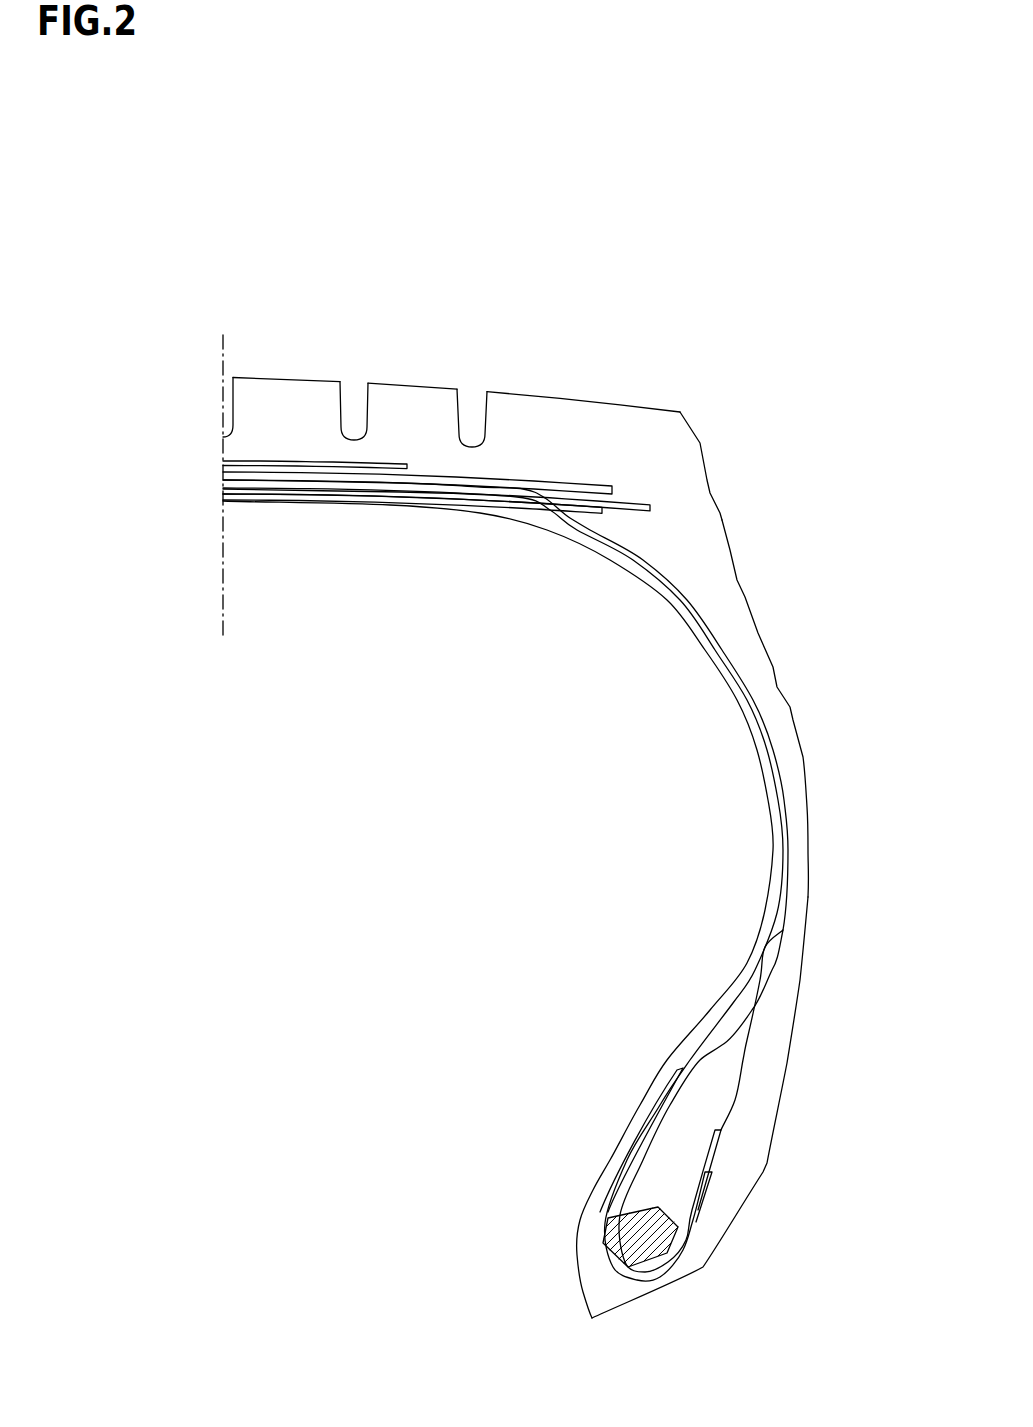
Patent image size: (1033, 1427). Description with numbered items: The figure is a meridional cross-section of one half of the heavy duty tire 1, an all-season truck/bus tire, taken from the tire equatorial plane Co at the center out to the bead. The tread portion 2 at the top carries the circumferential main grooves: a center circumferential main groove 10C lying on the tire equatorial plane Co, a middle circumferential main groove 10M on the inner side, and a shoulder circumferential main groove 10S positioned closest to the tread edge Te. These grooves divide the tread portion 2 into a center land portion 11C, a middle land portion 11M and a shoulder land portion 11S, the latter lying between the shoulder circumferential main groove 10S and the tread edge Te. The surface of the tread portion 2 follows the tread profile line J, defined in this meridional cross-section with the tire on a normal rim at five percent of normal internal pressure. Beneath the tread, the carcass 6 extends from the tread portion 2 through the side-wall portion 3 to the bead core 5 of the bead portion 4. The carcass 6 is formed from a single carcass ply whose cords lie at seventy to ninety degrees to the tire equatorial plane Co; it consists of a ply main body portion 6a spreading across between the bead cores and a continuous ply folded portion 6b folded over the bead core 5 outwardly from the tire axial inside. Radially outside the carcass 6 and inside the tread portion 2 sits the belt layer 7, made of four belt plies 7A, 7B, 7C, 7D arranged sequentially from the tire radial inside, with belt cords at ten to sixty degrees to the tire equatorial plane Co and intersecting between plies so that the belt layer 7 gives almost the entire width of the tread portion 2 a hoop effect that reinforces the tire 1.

The heavy duty tire 1 is at (728, 284).
The tread portion 2 is at (538, 412).
The side-wall portion 3 is at (821, 775).
The bead portion 4 is at (552, 1144).
The bead core 5 is at (615, 1238).
The carcass 6 is at (553, 962).
The ply main body portion 6a is at (730, 1007).
The ply folded portion 6b is at (717, 1143).
The belt layer 7 is at (135, 417).
The belt ply 7A is at (223, 486).
The belt ply 7B is at (223, 478).
The belt ply 7C is at (223, 470).
The belt ply 7D is at (223, 462).
The center circumferential main groove 10C is at (242, 390).
The middle circumferential main groove 10M is at (355, 407).
The shoulder circumferential main groove 10S is at (473, 410).
The center land portion 11C is at (297, 405).
The middle land portion 11M is at (413, 403).
The shoulder land portion 11S is at (603, 430).
The tread profile line J is at (648, 407).
The tread edge Te is at (680, 410).
The tire equatorial plane Co is at (222, 502).